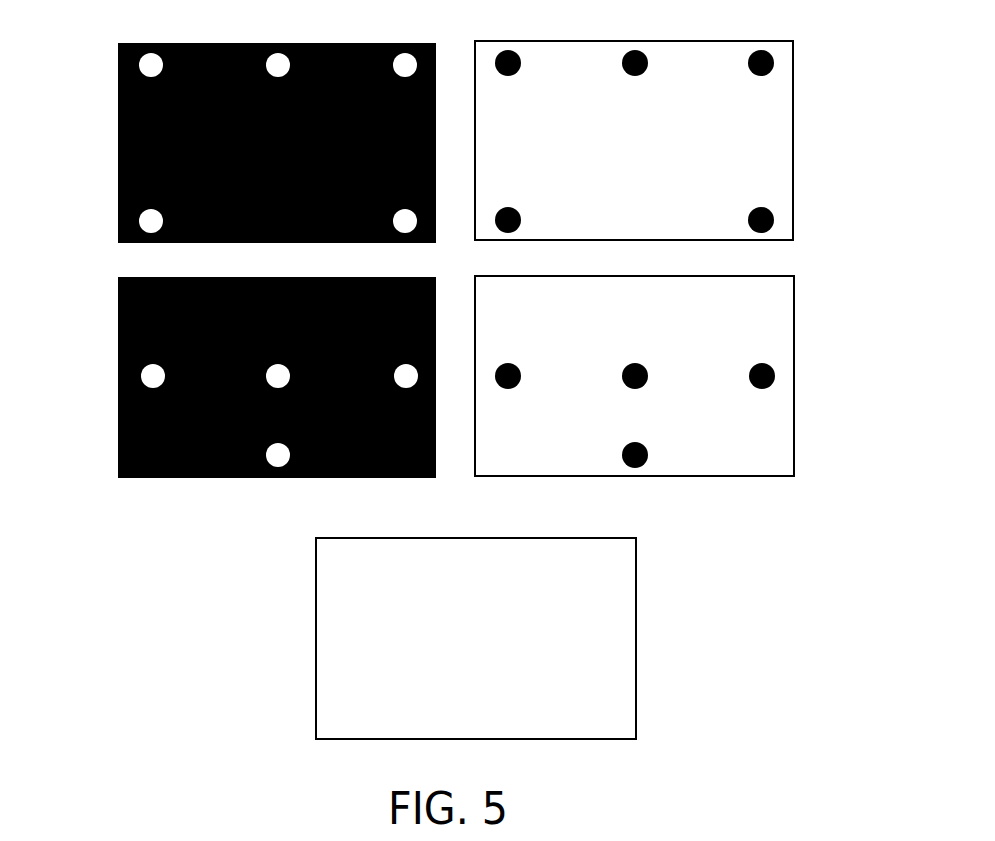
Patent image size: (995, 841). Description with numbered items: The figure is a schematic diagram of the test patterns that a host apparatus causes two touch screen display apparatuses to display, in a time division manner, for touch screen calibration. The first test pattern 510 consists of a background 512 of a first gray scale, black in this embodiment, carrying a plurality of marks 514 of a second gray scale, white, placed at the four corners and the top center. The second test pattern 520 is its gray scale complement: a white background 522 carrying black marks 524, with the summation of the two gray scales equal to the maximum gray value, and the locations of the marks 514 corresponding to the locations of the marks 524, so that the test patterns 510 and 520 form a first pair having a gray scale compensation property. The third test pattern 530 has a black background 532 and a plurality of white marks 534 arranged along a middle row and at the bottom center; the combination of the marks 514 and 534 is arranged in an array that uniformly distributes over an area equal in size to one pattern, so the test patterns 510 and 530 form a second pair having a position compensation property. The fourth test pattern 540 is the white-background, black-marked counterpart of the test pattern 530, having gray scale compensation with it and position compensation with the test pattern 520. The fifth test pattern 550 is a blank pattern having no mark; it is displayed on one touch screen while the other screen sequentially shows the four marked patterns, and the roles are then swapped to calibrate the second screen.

The test pattern 510 is at (130, 176).
The background 512 is at (142, 110).
The marks 514 is at (143, 57).
The test pattern 520 is at (775, 155).
The background 522 is at (750, 110).
The marks 524 is at (752, 55).
The test pattern 530 is at (125, 338).
The background 532 is at (143, 305).
The marks 534 is at (145, 370).
The test pattern 540 is at (780, 332).
The test pattern 550 is at (620, 630).